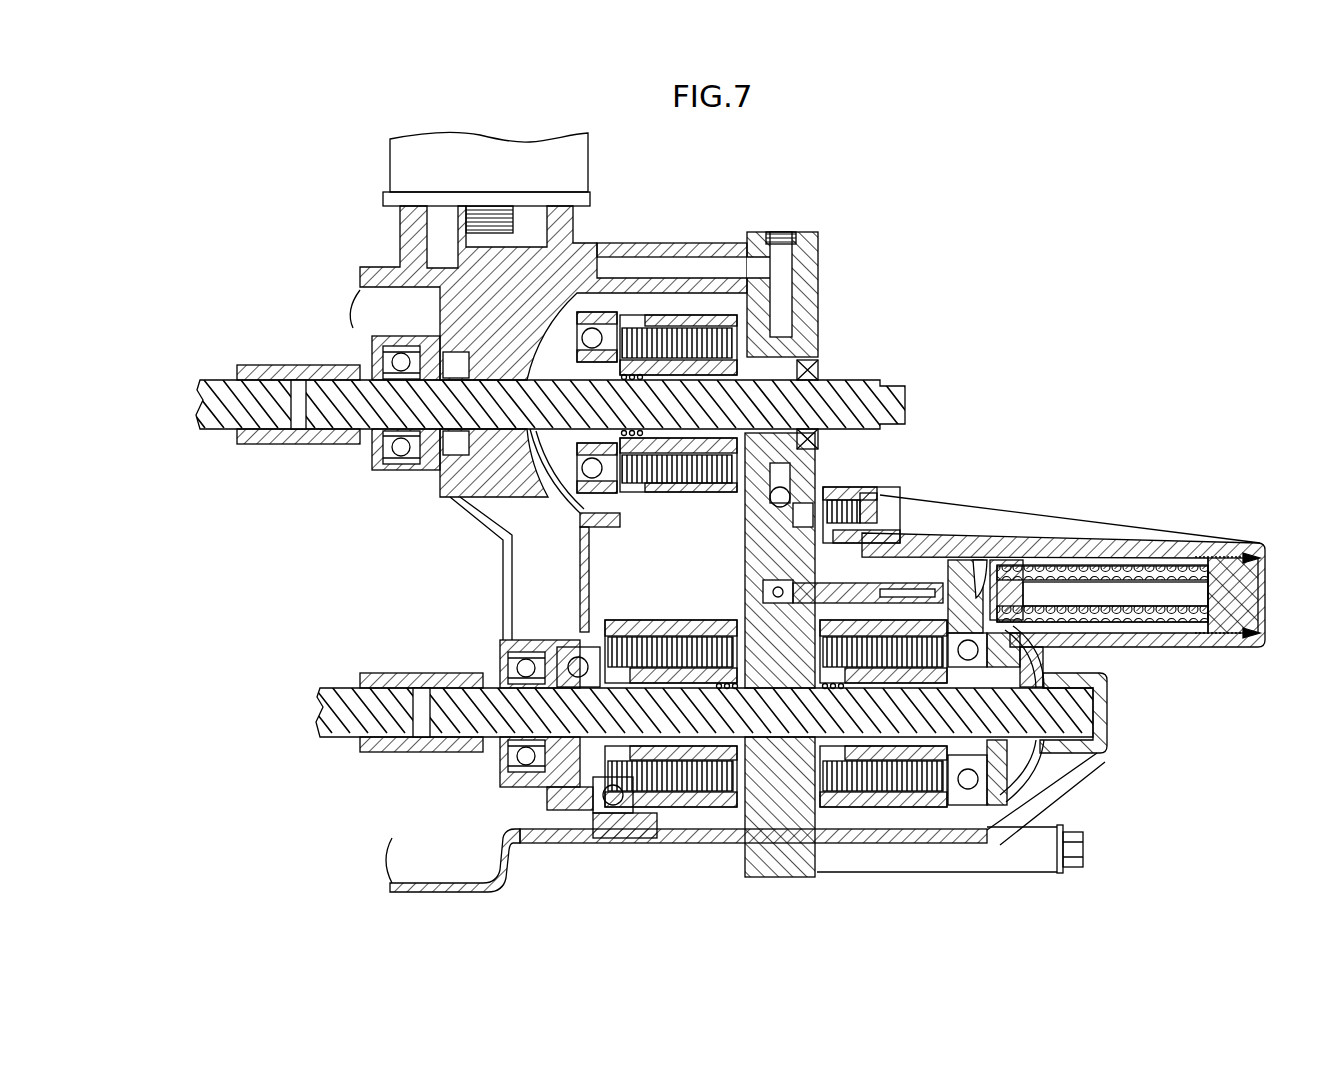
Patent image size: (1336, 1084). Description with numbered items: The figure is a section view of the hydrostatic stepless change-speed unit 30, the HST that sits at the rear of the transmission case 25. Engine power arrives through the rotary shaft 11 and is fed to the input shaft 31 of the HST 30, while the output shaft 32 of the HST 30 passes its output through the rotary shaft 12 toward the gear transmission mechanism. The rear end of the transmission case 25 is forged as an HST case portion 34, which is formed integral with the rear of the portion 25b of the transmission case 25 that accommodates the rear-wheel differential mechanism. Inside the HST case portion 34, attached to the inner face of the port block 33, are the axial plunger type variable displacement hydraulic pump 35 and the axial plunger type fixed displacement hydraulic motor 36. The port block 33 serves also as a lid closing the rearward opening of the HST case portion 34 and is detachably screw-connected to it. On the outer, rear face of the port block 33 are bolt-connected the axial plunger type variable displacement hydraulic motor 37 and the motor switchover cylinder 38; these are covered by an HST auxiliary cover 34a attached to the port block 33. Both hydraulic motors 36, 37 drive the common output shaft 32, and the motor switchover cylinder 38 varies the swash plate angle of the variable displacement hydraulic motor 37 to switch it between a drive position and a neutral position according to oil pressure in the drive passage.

The rotary shaft 11 is at (203, 383).
The rotary shaft 12 is at (343, 697).
The transmission case 25 is at (377, 273).
The portion of the transmission case 25b is at (698, 838).
The hydrostatic stepless change-speed unit 30 is at (998, 410).
The input shaft 31 is at (375, 418).
The output shaft 32 is at (500, 724).
The port block 33 is at (808, 308).
The HST case portion 34 is at (662, 238).
The clutch housing cylindrical portion 34a is at (1161, 660).
The variable displacement hydraulic pump 35 is at (706, 506).
The fixed displacement hydraulic motor 36 is at (681, 617).
The variable displacement hydraulic motor 37 is at (975, 556).
The motor switchover cylinder 38 is at (908, 562).